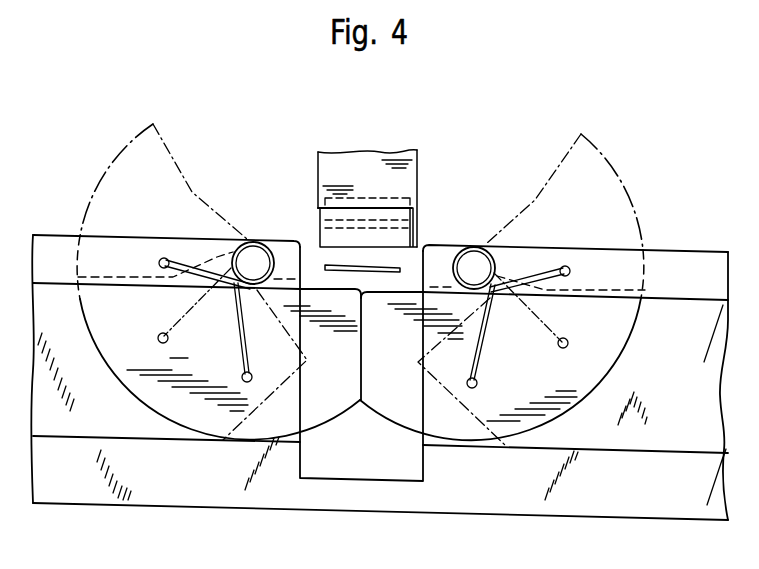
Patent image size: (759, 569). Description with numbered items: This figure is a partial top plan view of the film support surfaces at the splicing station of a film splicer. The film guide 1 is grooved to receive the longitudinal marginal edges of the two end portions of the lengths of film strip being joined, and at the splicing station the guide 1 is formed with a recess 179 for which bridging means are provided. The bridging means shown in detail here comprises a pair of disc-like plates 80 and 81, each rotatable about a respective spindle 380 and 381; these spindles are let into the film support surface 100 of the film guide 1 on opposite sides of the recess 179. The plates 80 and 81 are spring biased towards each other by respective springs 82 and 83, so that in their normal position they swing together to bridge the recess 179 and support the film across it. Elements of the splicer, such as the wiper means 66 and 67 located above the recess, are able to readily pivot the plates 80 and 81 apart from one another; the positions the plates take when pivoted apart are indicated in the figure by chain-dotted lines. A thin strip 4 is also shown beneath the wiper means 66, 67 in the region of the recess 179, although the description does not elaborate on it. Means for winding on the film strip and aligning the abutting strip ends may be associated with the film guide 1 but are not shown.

The film guide 1 is at (500, 504).
The strip 4 is at (323, 267).
The wiper means 66 is at (402, 198).
The wiper means 67 is at (413, 242).
The disc-like plate 80 is at (113, 342).
The disc-like plate 81 is at (607, 362).
The spring 82 is at (237, 352).
The spring 83 is at (481, 352).
The film support surface 100 is at (117, 417).
The recess 179 is at (307, 470).
The spindle 380 is at (257, 253).
The spindle 381 is at (488, 256).